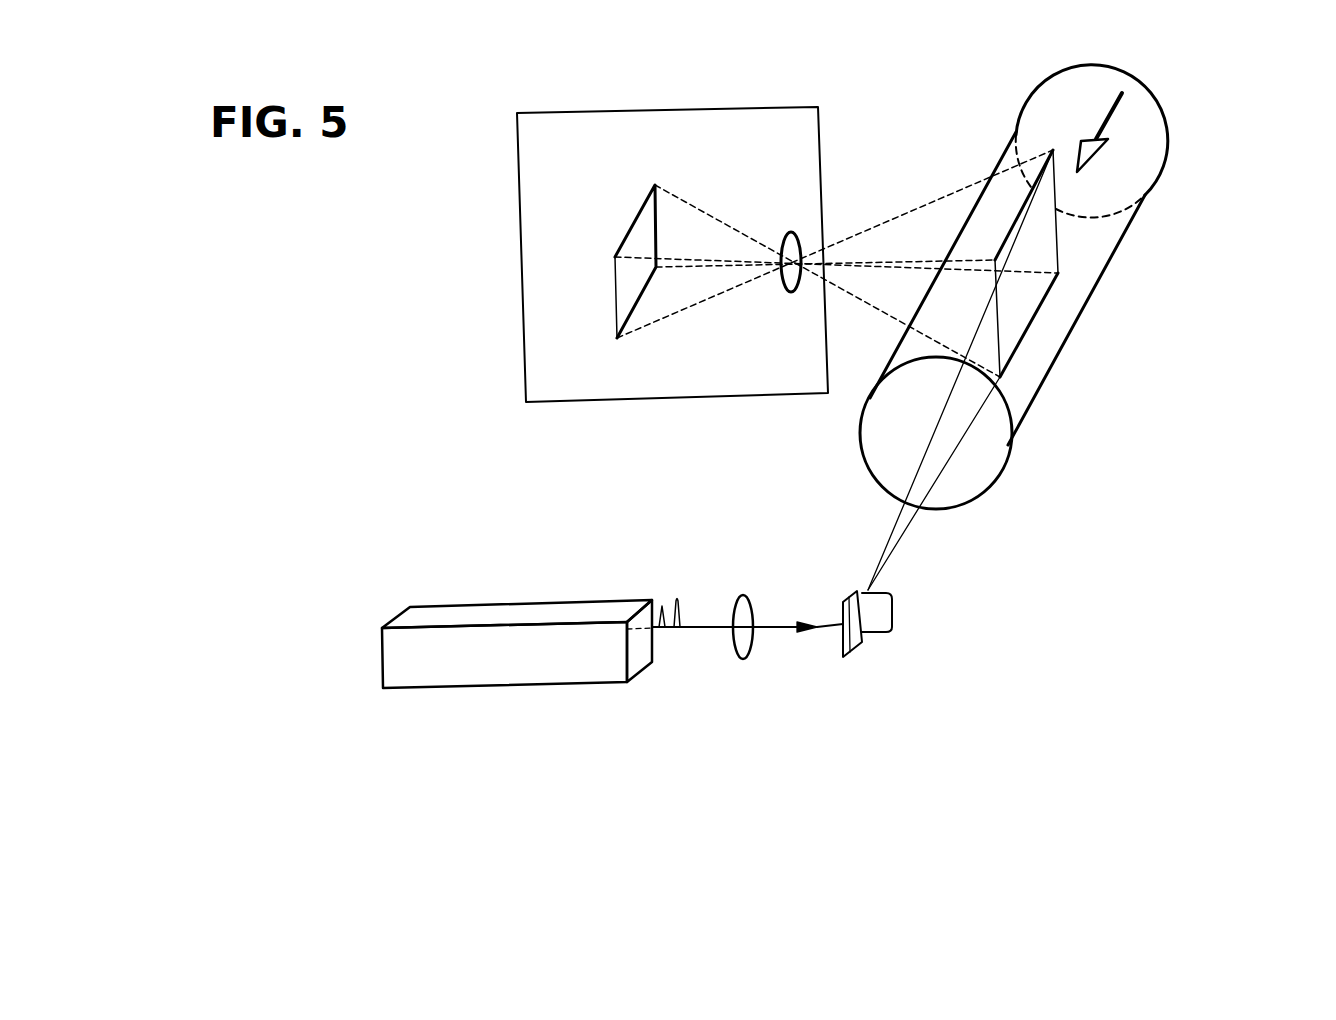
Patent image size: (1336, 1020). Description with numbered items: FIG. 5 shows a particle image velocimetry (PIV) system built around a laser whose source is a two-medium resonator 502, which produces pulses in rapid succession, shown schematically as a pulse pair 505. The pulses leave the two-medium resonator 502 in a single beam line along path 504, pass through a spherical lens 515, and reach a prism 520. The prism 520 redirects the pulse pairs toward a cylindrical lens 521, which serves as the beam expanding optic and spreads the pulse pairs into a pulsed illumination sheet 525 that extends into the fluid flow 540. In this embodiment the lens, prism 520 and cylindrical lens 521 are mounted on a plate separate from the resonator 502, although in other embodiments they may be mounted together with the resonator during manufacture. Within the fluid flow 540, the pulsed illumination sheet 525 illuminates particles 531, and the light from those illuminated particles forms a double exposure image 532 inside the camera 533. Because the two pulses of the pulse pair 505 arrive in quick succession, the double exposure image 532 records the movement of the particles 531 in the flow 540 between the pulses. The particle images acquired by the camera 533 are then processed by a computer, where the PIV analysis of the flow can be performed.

The 2-medium resonator 502 is at (533, 683).
The path 504 is at (700, 628).
The pulse pair 505 is at (673, 598).
The spherical lens 515 is at (742, 595).
The prism 520 is at (852, 655).
The cylindrical lens 521 is at (895, 615).
The pulsed illumination sheet 525 is at (900, 523).
The particles 531 is at (1030, 325).
The double exposure image 532 is at (640, 183).
The camera 533 is at (758, 107).
The fluid flow 540 is at (1118, 110).